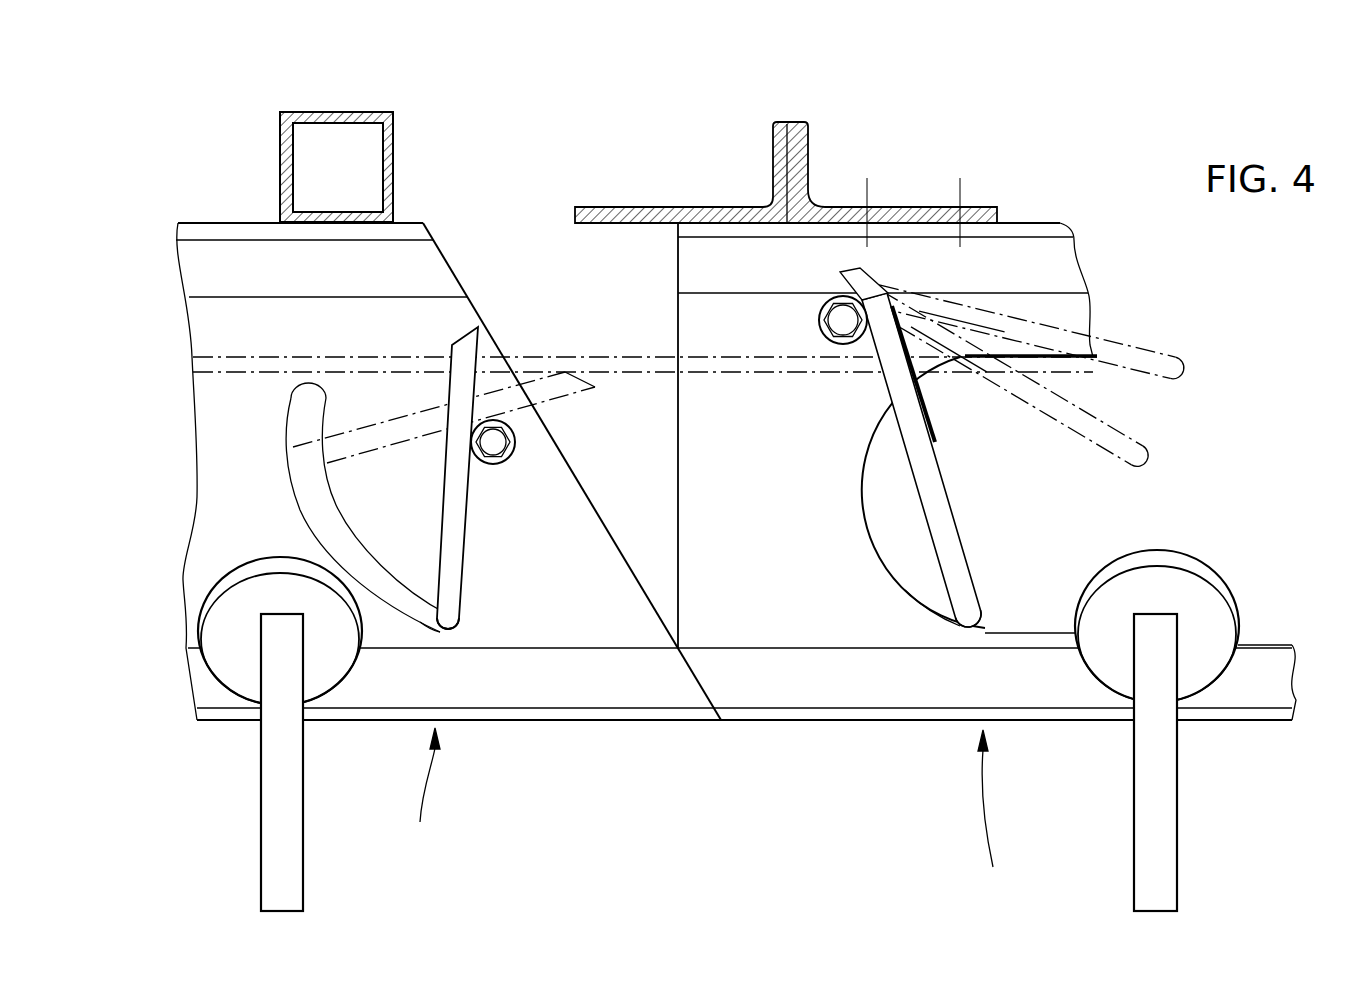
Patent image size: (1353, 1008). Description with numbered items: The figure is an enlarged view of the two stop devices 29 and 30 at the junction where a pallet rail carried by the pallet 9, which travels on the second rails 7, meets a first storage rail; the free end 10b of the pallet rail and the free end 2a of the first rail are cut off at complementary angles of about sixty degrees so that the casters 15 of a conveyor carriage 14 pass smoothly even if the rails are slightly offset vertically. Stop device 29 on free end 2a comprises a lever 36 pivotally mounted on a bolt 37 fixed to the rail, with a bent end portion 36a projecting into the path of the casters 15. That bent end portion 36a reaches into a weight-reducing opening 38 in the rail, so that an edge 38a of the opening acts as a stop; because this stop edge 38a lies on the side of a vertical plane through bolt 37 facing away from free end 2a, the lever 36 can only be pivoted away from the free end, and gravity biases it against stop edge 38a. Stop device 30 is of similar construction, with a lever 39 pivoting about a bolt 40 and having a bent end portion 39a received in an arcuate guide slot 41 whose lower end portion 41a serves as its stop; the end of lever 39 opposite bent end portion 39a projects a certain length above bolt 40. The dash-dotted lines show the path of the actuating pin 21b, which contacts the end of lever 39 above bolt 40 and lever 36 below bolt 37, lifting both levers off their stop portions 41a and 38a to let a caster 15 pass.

The pallet 9 is at (281, 142).
The second rail 7 is at (772, 174).
The bolt 37 is at (833, 318).
The bolt 40 is at (496, 436).
The opening 38 is at (1000, 447).
The stop edge 38a is at (936, 612).
The lever 36 is at (962, 577).
The bent end portion 36a is at (987, 630).
The lever 39 is at (458, 520).
The bent end portion 39a is at (457, 637).
The arcuate guide slot 41 is at (300, 490).
The lower end portion of slot 41a is at (440, 632).
The actuating pin 21b is at (227, 366).
The caster 15 is at (250, 607).
The conveyor carriage 14 is at (222, 742).
The free end of pallet rail 10b is at (597, 683).
The free end of first rail 2a is at (782, 683).
The stop device 30 is at (416, 821).
The stop device 29 is at (997, 822).